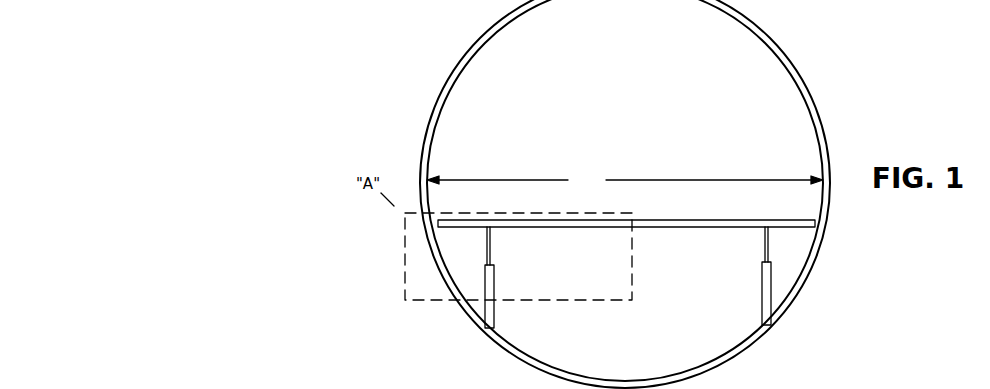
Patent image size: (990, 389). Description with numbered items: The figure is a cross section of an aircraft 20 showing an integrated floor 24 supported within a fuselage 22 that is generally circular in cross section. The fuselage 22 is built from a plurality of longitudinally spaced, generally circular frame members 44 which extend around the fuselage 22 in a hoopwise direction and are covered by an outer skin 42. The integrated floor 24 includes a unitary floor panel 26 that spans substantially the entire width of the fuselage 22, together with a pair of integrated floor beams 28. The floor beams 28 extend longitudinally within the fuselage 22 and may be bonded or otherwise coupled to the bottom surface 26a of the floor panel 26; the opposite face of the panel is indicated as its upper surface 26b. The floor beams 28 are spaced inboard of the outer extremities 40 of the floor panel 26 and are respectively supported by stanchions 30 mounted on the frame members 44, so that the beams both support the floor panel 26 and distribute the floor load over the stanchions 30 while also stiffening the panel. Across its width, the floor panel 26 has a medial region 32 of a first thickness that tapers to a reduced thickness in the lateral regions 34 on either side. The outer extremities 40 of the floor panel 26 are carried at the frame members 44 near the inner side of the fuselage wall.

The aircraft 20 is at (437, 53).
The fuselage 22 is at (786, 52).
The integrated floor 24 is at (546, 164).
The floor panel 26 is at (698, 231).
The bottom surface 26a is at (543, 237).
The shelf panel upper surface 26b is at (680, 203).
The floor beams 28 is at (492, 250).
The stanchions 30 is at (485, 311).
The medial region 32 is at (702, 213).
The lateral regions 34 is at (548, 213).
The outer extremities 40 is at (438, 198).
The outer skin 42 is at (833, 118).
The frame members 44 is at (822, 157).